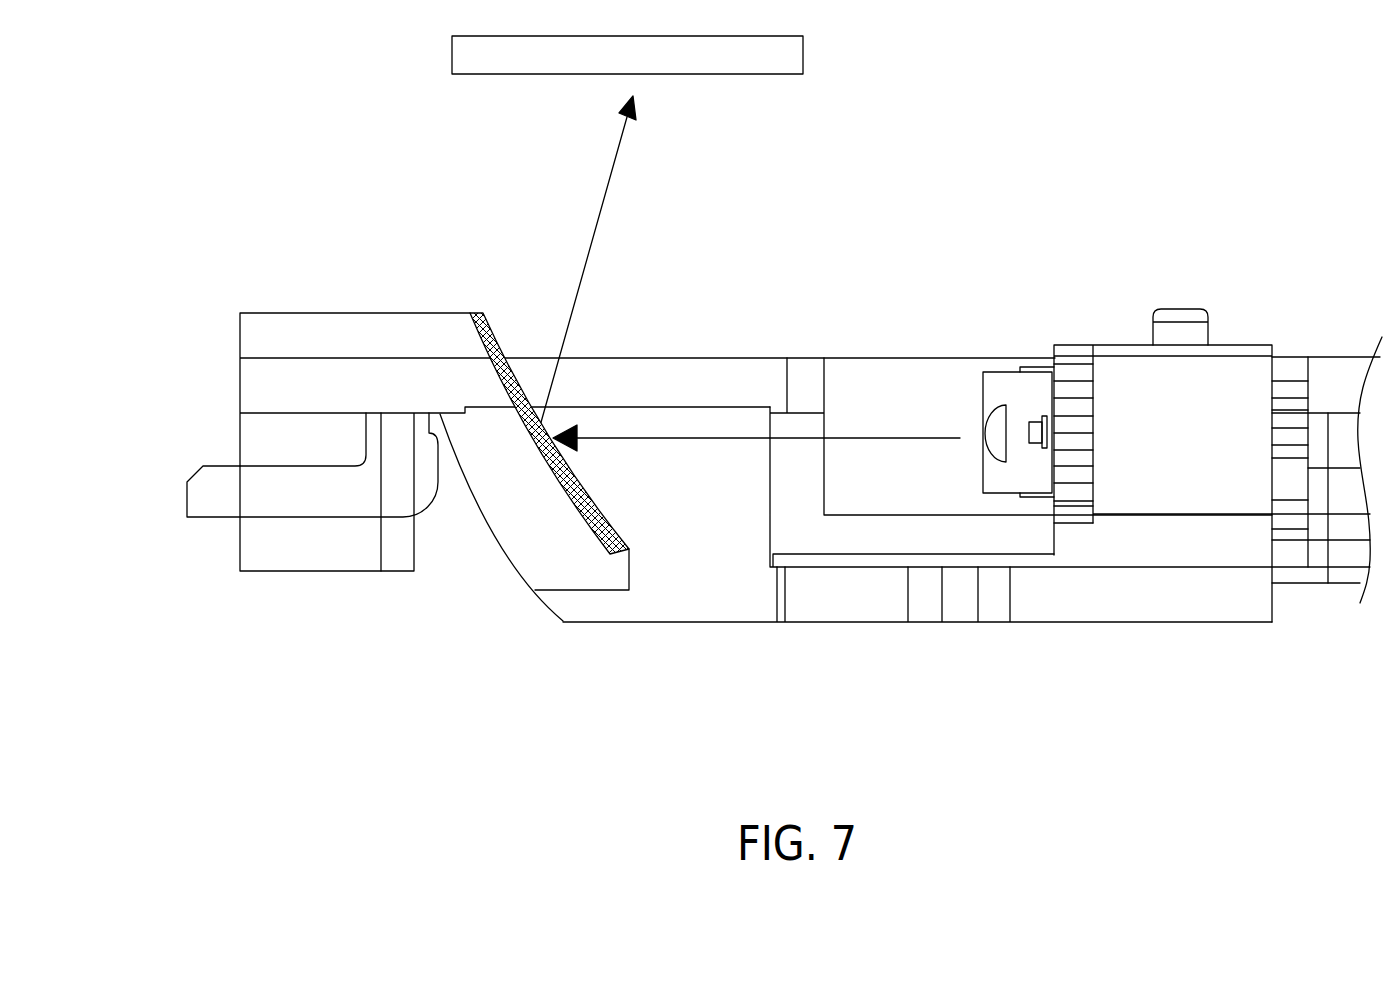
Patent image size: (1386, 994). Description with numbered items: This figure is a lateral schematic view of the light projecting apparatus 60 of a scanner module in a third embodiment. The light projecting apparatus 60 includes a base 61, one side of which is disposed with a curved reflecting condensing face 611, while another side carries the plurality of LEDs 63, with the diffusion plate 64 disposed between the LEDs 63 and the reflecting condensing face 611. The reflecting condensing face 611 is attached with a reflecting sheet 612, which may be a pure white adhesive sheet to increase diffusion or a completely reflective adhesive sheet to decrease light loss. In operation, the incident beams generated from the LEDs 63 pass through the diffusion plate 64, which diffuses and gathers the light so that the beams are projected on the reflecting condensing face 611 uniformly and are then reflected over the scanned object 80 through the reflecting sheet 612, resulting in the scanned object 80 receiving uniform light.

The light projecting apparatus 60 is at (192, 269).
The base 61 is at (289, 329).
The reflecting condensing face 611 is at (545, 478).
The reflecting sheet 612 is at (507, 357).
The LEDs 63 is at (1029, 430).
The diffusion plate 64 is at (1003, 405).
The scanned object 80 is at (788, 56).